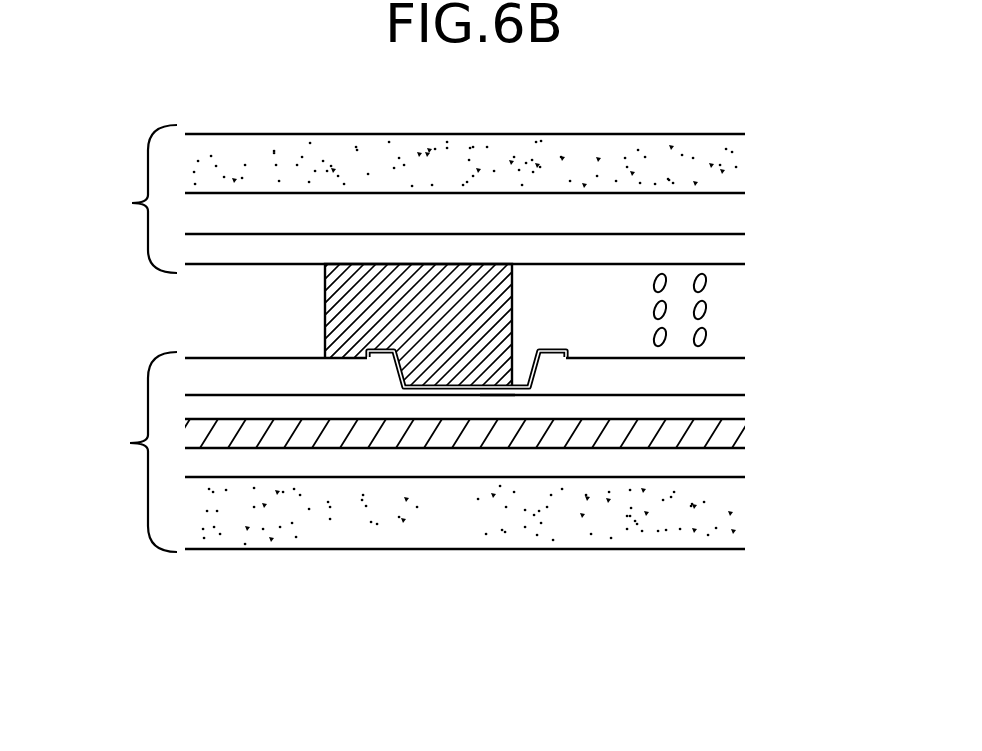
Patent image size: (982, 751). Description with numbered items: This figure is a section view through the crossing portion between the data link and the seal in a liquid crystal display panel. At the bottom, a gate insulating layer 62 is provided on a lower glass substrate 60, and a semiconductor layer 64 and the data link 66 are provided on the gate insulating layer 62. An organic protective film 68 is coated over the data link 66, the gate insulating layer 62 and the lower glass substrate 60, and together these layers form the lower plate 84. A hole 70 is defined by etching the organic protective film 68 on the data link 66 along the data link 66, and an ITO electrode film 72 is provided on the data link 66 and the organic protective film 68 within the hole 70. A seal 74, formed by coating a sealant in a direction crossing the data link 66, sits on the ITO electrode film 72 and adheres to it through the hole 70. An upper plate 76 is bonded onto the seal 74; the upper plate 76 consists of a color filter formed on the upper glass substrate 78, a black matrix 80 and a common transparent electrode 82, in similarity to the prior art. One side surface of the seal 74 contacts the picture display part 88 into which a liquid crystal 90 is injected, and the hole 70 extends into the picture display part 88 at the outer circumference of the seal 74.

The lower glass substrate 60 is at (743, 522).
The gate insulating layer 62 is at (743, 464).
The semiconductor layer 64 is at (745, 434).
The data link 66 is at (743, 402).
The organic protective film 68 is at (743, 374).
The hole 70 is at (375, 361).
The ITO electrode film 72 is at (497, 393).
The seal 74 is at (325, 277).
The upper plate 76 is at (134, 199).
The upper glass substrate 78 is at (736, 164).
The black matrix 80 is at (740, 219).
The common transparent electrode 82 is at (743, 257).
The lower plate 84 is at (126, 452).
The picture display part 88 is at (743, 290).
The liquid crystal 90 is at (705, 309).